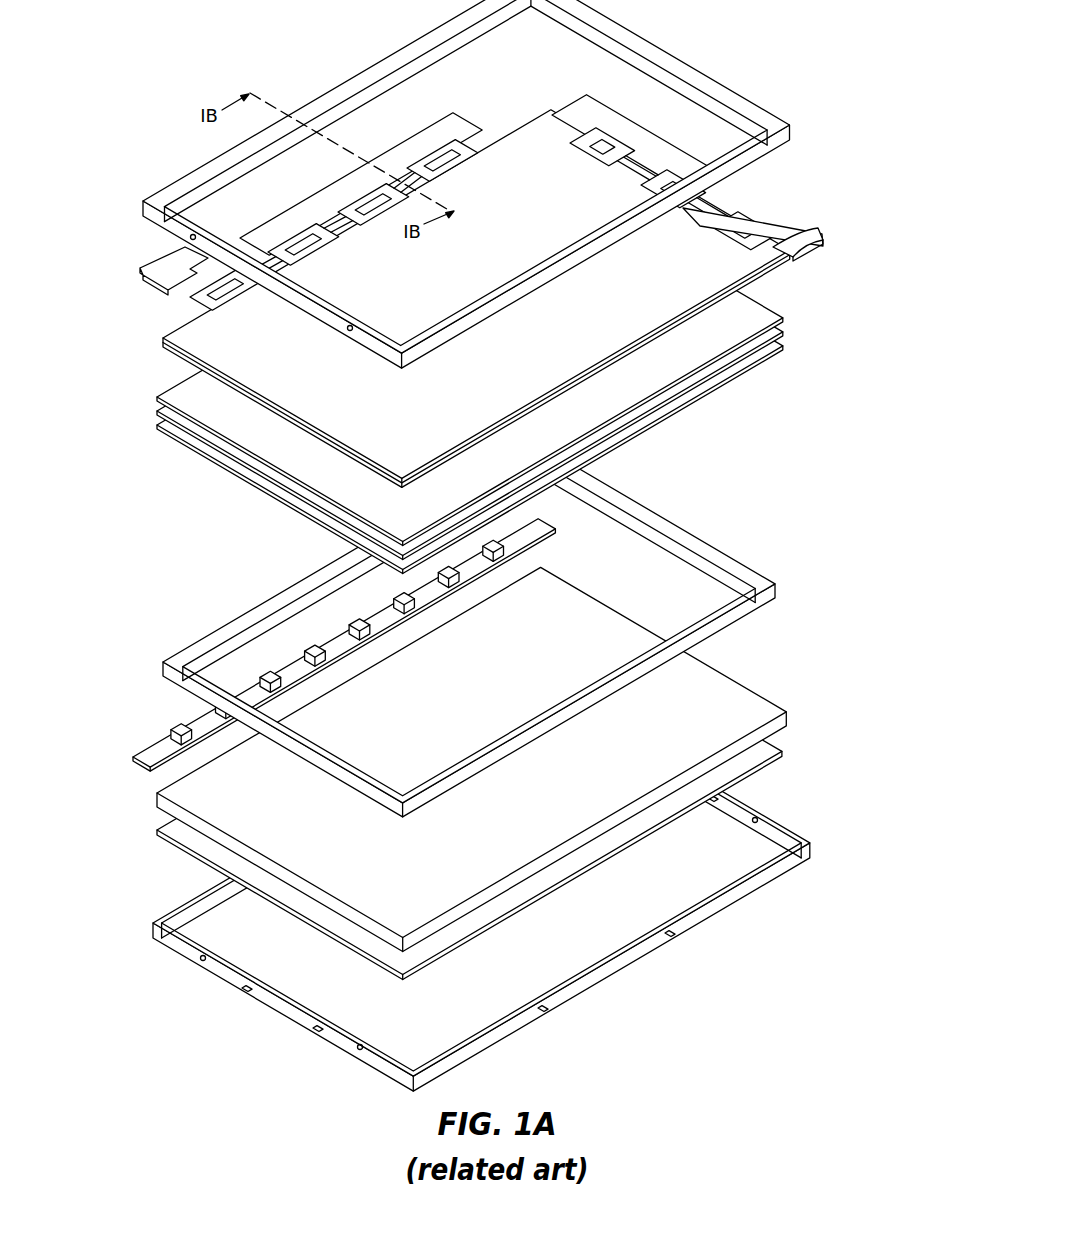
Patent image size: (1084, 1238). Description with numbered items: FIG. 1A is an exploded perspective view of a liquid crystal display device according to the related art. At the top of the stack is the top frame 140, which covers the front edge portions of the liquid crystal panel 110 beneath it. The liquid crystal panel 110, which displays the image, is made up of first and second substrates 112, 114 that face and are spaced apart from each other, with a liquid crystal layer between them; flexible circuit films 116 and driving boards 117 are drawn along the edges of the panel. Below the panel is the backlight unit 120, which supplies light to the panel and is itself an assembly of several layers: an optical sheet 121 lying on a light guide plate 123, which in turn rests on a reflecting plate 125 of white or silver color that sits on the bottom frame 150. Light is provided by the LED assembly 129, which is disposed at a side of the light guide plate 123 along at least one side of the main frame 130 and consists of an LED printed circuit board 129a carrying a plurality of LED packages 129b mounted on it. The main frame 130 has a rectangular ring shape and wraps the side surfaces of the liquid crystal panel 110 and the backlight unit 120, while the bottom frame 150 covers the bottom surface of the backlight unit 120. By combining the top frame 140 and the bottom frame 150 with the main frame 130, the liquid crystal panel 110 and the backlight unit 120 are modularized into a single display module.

The liquid crystal panel 110 is at (526, 279).
The first substrate 112 is at (820, 237).
The second substrate 114 is at (737, 268).
The flexible circuit film 116 is at (560, 132).
The driving board 117 is at (413, 145).
The backlight unit 120 is at (492, 576).
The optical sheet 121 is at (497, 373).
The light guide plate 123 is at (790, 718).
The reflecting plate 125 is at (785, 752).
The light emitting diode (LED) assembly 129 is at (506, 608).
The LED printed circuit board (PCB) 129a is at (520, 537).
The LED packages 129b is at (543, 560).
The main frame 130 is at (187, 682).
The top frame 140 is at (782, 117).
The bottom frame 150 is at (623, 962).